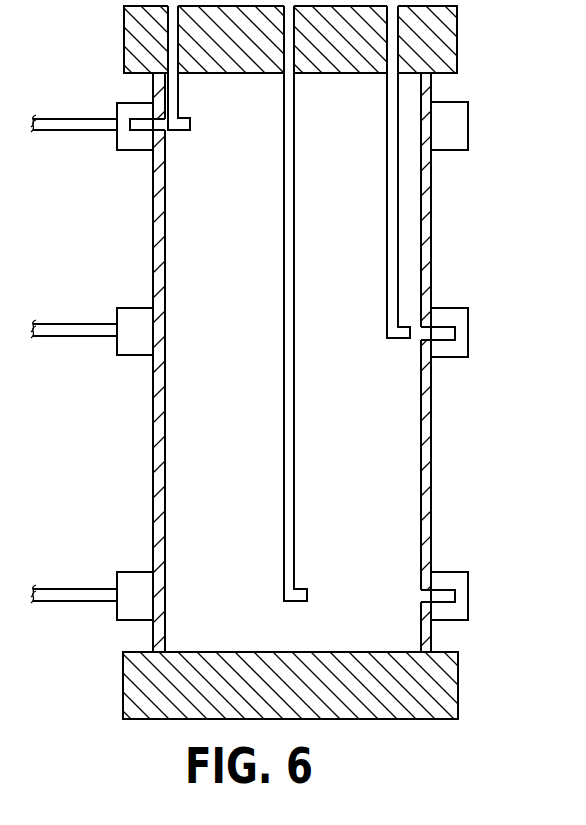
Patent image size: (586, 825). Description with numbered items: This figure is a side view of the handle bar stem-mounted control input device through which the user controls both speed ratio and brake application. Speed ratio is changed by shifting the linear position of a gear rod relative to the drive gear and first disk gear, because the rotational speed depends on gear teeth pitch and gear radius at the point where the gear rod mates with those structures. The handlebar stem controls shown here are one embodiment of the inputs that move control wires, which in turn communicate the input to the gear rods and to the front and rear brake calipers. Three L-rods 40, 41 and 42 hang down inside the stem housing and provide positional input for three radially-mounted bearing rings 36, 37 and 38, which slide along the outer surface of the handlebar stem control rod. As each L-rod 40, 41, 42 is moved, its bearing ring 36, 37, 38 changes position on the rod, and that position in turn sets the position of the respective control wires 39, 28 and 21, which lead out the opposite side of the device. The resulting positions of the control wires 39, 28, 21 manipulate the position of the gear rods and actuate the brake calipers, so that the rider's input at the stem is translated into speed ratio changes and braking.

The control wire 21 is at (80, 600).
The control wire 28 is at (80, 337).
The radially-mounted bearing ring 36 is at (468, 120).
The radially-mounted bearing ring 37 is at (468, 330).
The radially-mounted bearing ring 38 is at (468, 593).
The control wire 39 is at (80, 125).
The L-rod 40 is at (178, 100).
The L-rod 41 is at (294, 183).
The L-rod 42 is at (387, 292).